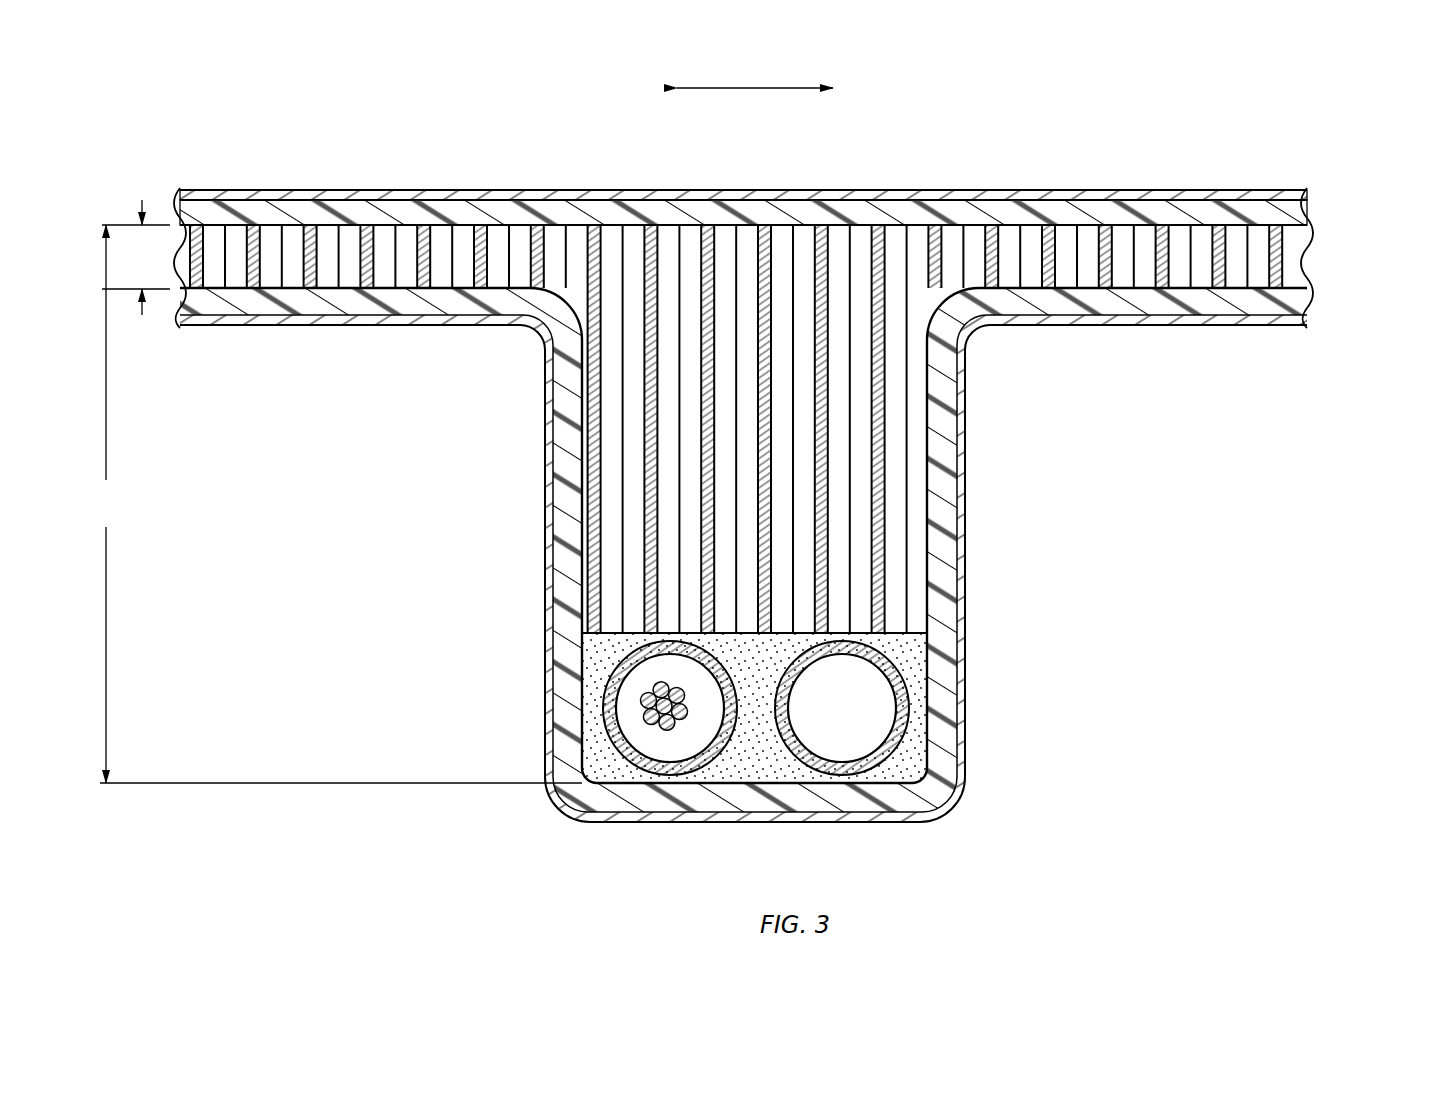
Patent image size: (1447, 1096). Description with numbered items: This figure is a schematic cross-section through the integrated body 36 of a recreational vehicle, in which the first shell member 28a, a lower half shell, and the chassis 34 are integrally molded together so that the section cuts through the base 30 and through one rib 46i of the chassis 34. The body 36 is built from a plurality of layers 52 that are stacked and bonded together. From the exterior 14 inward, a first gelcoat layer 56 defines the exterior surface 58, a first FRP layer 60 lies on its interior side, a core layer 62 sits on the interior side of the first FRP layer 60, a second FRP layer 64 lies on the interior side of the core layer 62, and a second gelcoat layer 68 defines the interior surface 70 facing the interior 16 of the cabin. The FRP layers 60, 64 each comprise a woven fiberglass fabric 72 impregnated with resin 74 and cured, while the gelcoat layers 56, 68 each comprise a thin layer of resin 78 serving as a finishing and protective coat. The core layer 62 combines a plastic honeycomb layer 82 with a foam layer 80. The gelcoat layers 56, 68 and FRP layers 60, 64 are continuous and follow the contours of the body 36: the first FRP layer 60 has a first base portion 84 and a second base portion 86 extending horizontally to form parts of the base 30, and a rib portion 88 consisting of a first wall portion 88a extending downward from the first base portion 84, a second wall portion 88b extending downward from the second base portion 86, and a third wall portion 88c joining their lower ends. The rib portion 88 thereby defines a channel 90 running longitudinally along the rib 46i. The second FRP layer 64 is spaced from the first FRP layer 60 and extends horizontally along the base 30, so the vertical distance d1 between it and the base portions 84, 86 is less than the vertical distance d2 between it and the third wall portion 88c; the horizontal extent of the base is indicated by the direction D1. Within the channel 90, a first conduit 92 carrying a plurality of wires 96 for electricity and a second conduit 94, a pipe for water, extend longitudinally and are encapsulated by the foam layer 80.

The exterior 14 is at (284, 584).
The interior 16 is at (426, 59).
The first shell member 28a is at (357, 190).
The base 30 is at (435, 190).
The chassis 34 is at (968, 720).
The integrated body 36 is at (1180, 93).
The rib 46i is at (545, 500).
The plurality of layers 52 is at (807, 495).
The first gelcoat layer 56 is at (769, 568).
The exterior surface 58 is at (1210, 333).
The first FRP layer 60 is at (1303, 300).
The core layer 62 is at (1296, 257).
The second FRP layer 64 is at (1303, 212).
The second gelcoat layer 68 is at (1305, 191).
The interior surface 70 is at (1210, 182).
The fiberglass fabric 72 is at (935, 210).
The resin 74 is at (1088, 212).
The layer of resin 78 is at (240, 195).
The foam layer 80 is at (915, 645).
The plastic honeycomb layer 82 is at (783, 243).
The first base portion 84 is at (383, 307).
The second base portion 86 is at (1130, 305).
The rib portion 88 is at (565, 555).
The first wall portion 88a is at (572, 440).
The second wall portion 88b is at (945, 434).
The third wall portion 88c is at (840, 815).
The channel 90 is at (912, 480).
The first conduit 92 is at (614, 717).
The second conduit 94 is at (900, 688).
The wires 96 is at (645, 702).
The panel direction D1 is at (751, 88).
The vertical distance d1 is at (136, 257).
The vertical distance d2 is at (336, 504).